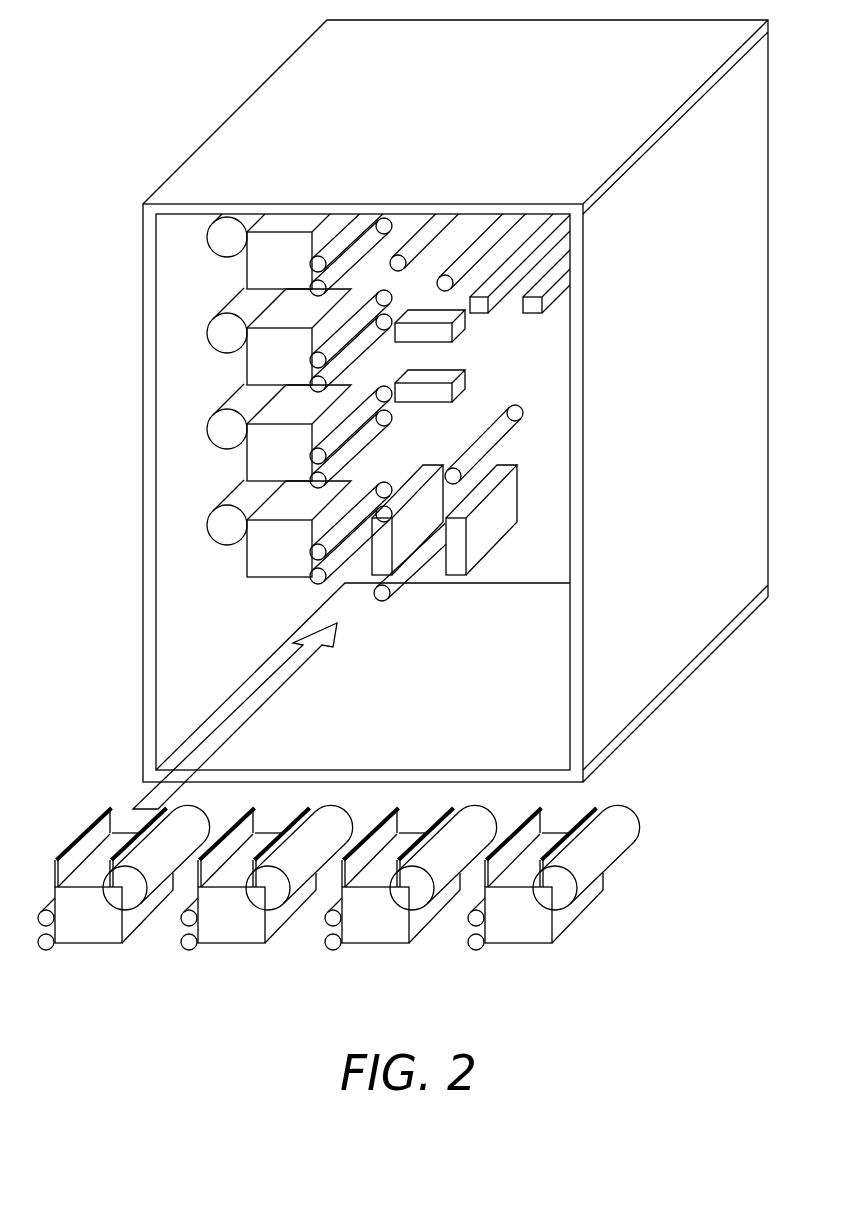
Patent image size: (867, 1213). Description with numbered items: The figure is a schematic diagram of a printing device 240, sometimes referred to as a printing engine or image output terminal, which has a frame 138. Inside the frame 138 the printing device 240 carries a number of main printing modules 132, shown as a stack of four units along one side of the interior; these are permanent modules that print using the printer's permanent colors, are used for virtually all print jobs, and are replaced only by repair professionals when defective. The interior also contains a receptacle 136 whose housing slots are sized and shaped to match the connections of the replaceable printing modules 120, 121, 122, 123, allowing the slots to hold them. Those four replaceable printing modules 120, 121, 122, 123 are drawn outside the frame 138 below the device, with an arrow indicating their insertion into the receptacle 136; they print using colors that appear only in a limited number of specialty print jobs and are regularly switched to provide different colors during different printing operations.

The printing device 240 is at (290, 102).
The frame 138 is at (173, 213).
The main printing modules 132 is at (299, 388).
The receptacle 136 is at (504, 255).
The replaceable printing module 120 is at (88, 927).
The replaceable printing module 121 is at (231, 927).
The replaceable printing module 122 is at (375, 927).
The replaceable printing module 123 is at (518, 927).